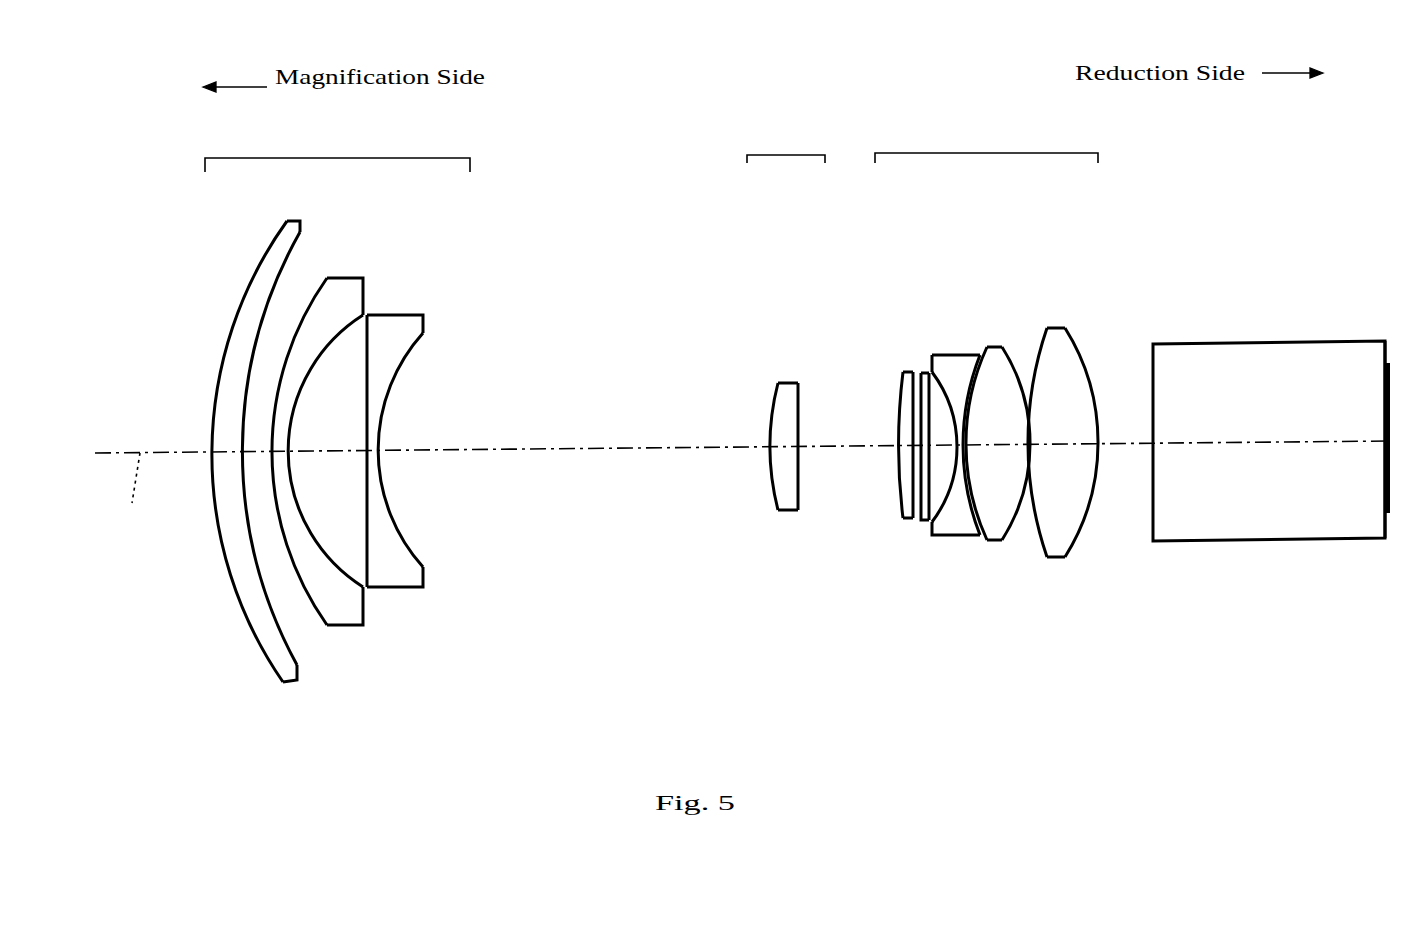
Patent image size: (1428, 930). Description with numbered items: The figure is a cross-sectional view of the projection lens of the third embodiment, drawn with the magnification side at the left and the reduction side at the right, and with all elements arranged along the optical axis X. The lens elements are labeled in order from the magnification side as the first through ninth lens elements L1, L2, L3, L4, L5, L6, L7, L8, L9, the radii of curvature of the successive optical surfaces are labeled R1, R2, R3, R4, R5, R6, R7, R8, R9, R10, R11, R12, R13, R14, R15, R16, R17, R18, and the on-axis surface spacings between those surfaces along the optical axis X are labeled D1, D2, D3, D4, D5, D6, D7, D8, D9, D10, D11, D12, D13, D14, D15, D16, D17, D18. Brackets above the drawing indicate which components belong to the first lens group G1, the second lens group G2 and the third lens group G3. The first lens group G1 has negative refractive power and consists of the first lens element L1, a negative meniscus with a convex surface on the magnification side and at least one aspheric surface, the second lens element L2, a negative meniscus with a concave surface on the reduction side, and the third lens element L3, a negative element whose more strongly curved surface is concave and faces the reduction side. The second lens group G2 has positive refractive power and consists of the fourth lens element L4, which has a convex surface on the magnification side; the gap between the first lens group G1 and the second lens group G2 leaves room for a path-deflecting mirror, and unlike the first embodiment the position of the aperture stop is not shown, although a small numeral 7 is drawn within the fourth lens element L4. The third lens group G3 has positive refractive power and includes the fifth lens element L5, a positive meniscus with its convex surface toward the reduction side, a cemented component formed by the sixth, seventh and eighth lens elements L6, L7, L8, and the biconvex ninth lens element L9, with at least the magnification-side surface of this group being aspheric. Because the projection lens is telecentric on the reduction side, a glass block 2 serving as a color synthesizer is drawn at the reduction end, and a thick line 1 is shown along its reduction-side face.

The first lens group G1 is at (337, 149).
The second lens group G2 is at (786, 141).
The third lens group G3 is at (986, 140).
The optical axis X is at (127, 491).
The first lens element L1 is at (235, 465).
The second lens element L2 is at (330, 467).
The third lens element L3 is at (418, 492).
The fourth lens element L4 is at (781, 472).
The fifth lens element L5 is at (878, 426).
The sixth lens element L6 is at (899, 497).
The seventh lens element L7 is at (964, 441).
The eighth lens element L8 is at (1019, 447).
The ninth lens element L9 is at (1092, 438).
The radius of curvature of first optical surface R1 is at (223, 310).
The radius of curvature of second optical surface R2 is at (280, 288).
The radius of curvature of third optical surface R3 is at (297, 332).
The radius of curvature of fourth optical surface R4 is at (320, 357).
The radius of curvature of fifth optical surface R5 is at (366, 470).
The radius of curvature of sixth optical surface R6 is at (398, 382).
The radius of curvature of seventh optical surface R7 is at (772, 400).
The radius of curvature of eighth optical surface R8 is at (800, 410).
The radius of curvature of ninth optical surface R9 is at (900, 407).
The radius of curvature of tenth optical surface R10 is at (915, 362).
The radius of curvature of eleventh optical surface R11 is at (903, 513).
The radius of curvature of twelfth optical surface R12 is at (950, 363).
The radius of curvature of thirteenth optical surface R13 is at (967, 360).
The radius of curvature of fourteenth optical surface R14 is at (1002, 353).
The radius of curvature of fifteenth optical surface R15 is at (1030, 373).
The radius of curvature of sixteenth optical surface R16 is at (1077, 347).
The radius of curvature of seventeenth optical surface R17 is at (1153, 393).
The radius of curvature of eighteenth optical surface R18 is at (1385, 357).
The first on-axis surface spacing D1 is at (200, 440).
The second on-axis surface spacing D2 is at (233, 475).
The third on-axis surface spacing D3 is at (282, 458).
The fourth on-axis surface spacing D4 is at (348, 448).
The fifth on-axis surface spacing D5 is at (393, 438).
The sixth on-axis surface spacing D6 is at (482, 448).
The seventh on-axis surface spacing D7 is at (762, 440).
The eighth on-axis surface spacing D8 is at (832, 453).
The ninth on-axis surface spacing D9 is at (900, 438).
The tenth on-axis surface spacing D10 is at (900, 458).
The eleventh on-axis surface spacing D11 is at (900, 425).
The twelfth on-axis surface spacing D12 is at (983, 443).
The thirteenth on-axis surface spacing D13 is at (1000, 453).
The fourteenth on-axis surface spacing D14 is at (1052, 437).
The fifteenth on-axis surface spacing D15 is at (1067, 452).
The sixteenth on-axis surface spacing D16 is at (1130, 450).
The seventeenth on-axis surface spacing D17 is at (1200, 440).
The eighteenth on-axis surface spacing D18 is at (1380, 447).
The aperture stop 7 is at (784, 438).
The image display element 1 is at (1388, 467).
The glass block 2 is at (1217, 523).